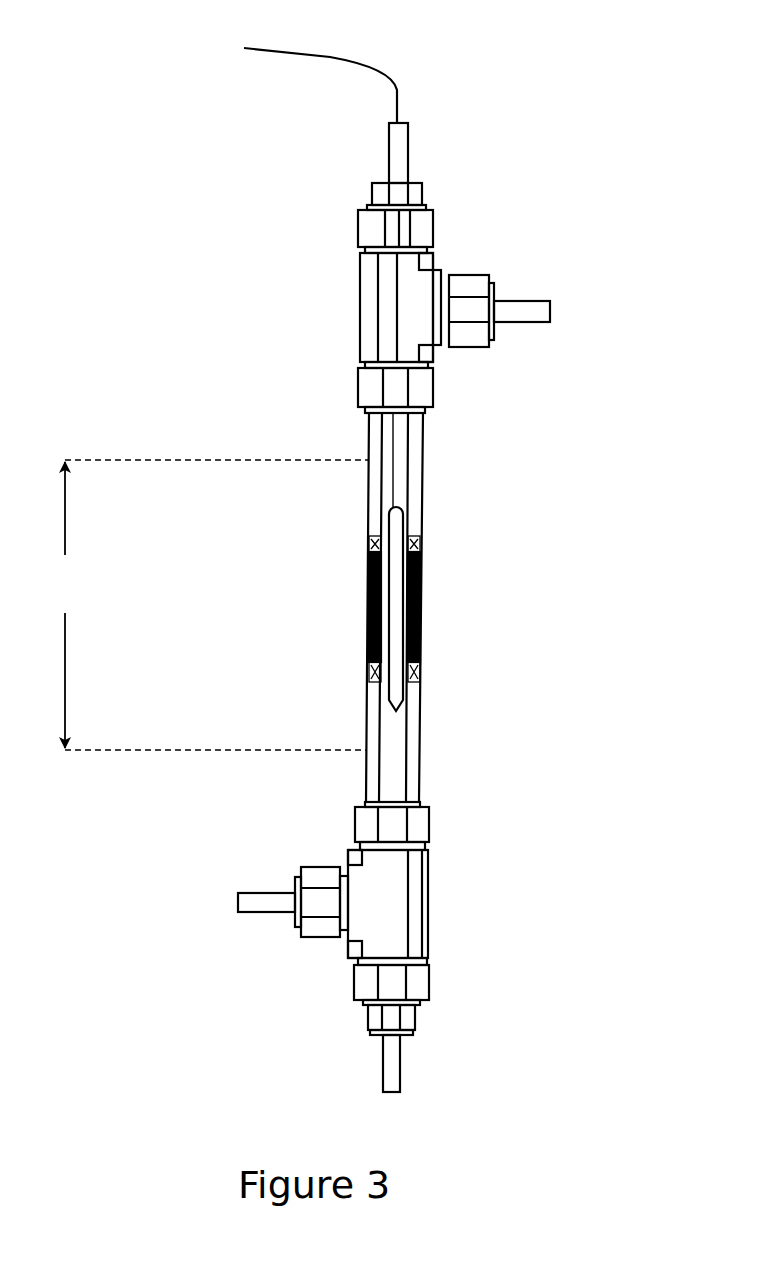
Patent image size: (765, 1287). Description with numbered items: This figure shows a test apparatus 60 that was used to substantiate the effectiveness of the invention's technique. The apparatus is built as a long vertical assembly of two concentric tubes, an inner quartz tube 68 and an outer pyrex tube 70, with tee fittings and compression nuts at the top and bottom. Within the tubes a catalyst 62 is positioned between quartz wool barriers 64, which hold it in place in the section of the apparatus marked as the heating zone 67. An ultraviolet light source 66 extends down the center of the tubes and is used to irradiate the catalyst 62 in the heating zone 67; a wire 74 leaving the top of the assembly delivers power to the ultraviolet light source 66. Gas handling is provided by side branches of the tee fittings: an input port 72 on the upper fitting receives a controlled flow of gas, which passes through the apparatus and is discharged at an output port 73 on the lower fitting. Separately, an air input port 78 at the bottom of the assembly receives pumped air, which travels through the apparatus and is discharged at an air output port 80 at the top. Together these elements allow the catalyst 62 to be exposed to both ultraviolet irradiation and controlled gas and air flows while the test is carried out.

The test apparatus 60 is at (552, 92).
The catalyst 62 is at (425, 629).
The quartz wool barriers 64 is at (425, 677).
The ultraviolet light source 66 is at (399, 534).
The heating zone 67 is at (207, 605).
The inner quartz tube 68 is at (403, 769).
The outer pyrex tube 70 is at (435, 441).
The input port 72 is at (543, 305).
The output port 73 is at (327, 903).
The wire 74 is at (333, 58).
The air input port 78 is at (398, 1077).
The air output port 80 is at (406, 153).